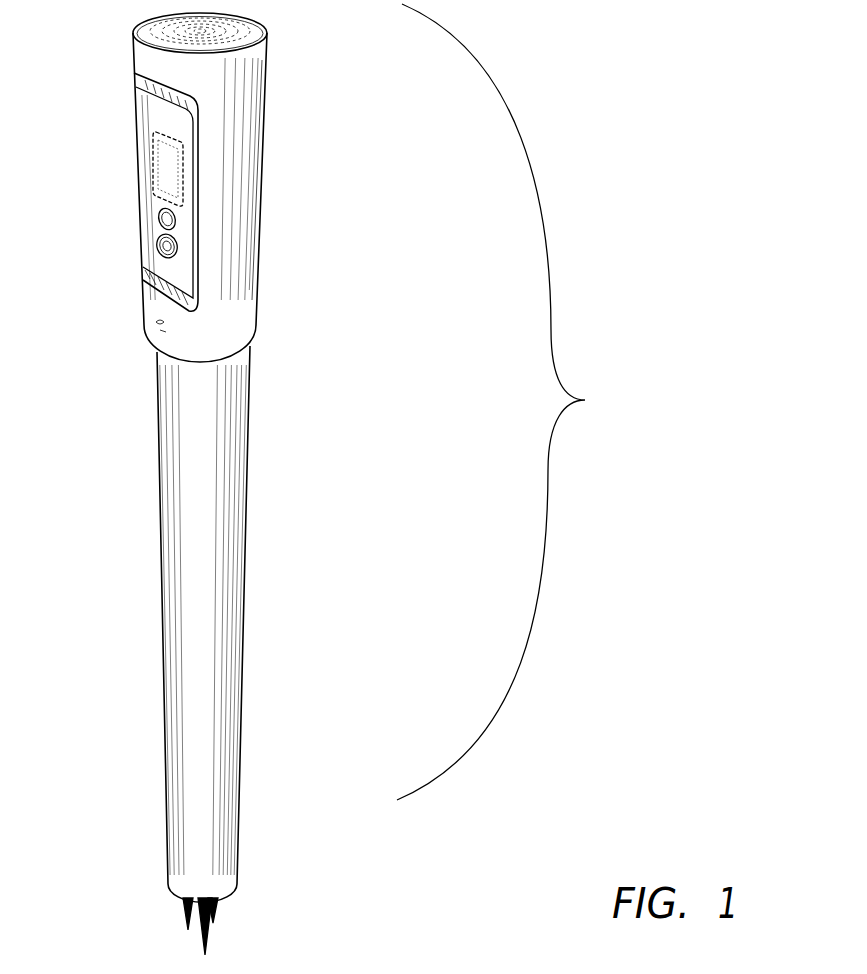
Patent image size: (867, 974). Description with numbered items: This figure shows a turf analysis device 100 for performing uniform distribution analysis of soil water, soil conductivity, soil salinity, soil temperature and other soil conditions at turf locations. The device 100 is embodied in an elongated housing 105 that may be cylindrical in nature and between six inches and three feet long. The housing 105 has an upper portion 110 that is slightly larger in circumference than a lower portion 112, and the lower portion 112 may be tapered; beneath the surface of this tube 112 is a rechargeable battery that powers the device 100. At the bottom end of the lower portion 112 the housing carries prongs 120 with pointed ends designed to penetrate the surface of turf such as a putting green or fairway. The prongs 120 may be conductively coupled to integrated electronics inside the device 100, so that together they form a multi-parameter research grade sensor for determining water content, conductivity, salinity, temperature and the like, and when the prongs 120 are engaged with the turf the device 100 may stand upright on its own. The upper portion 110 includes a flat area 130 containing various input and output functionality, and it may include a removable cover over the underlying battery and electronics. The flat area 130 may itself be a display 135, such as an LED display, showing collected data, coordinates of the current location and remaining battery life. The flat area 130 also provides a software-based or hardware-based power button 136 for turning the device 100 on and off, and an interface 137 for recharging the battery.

The turf analysis device 100 is at (593, 147).
The elongated housing 105 is at (585, 400).
The upper portion 110 is at (260, 253).
The lower portion 112 is at (243, 613).
The prongs 120 is at (228, 923).
The flat area 130 is at (160, 118).
The display 135 is at (152, 163).
The power button 136 is at (150, 218).
The interface 137 is at (148, 252).